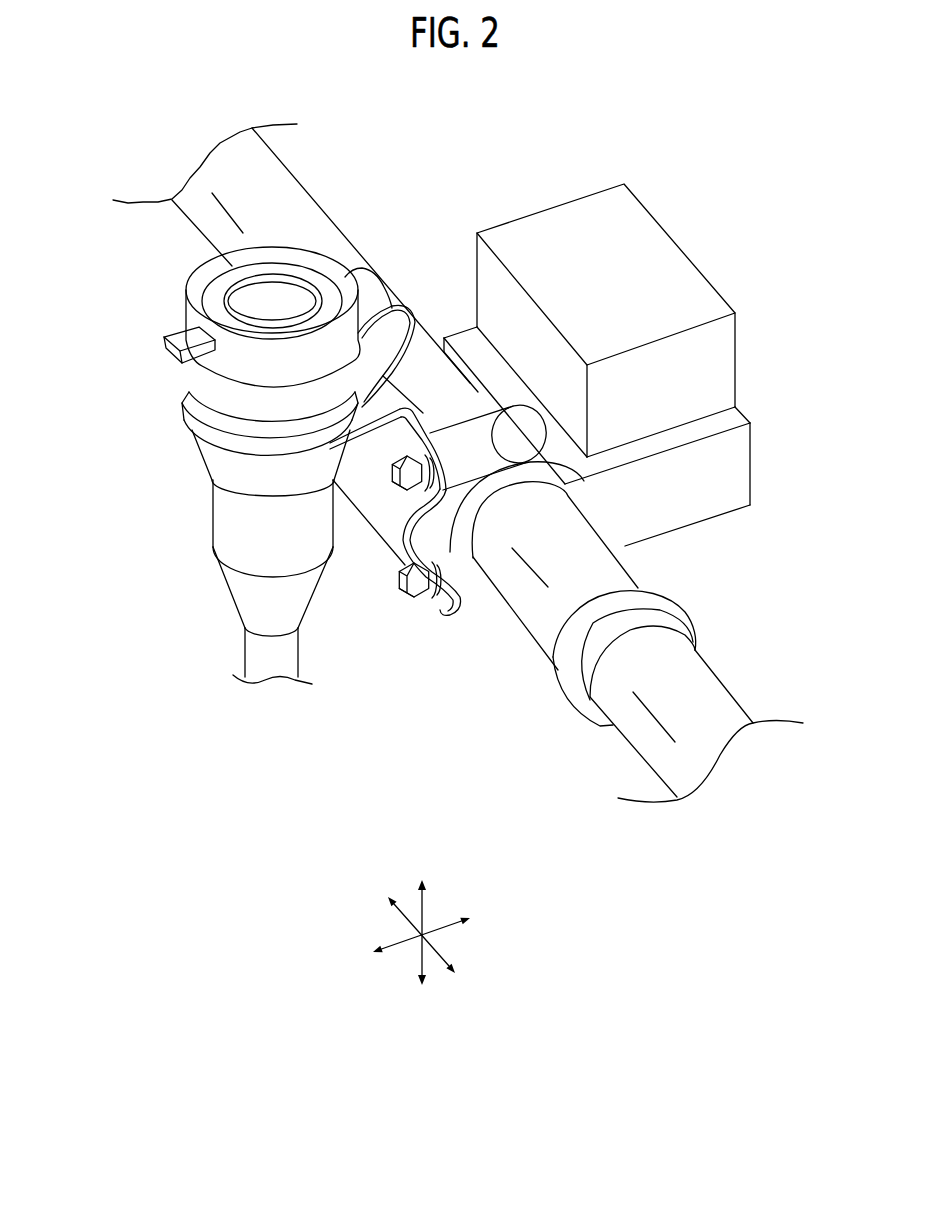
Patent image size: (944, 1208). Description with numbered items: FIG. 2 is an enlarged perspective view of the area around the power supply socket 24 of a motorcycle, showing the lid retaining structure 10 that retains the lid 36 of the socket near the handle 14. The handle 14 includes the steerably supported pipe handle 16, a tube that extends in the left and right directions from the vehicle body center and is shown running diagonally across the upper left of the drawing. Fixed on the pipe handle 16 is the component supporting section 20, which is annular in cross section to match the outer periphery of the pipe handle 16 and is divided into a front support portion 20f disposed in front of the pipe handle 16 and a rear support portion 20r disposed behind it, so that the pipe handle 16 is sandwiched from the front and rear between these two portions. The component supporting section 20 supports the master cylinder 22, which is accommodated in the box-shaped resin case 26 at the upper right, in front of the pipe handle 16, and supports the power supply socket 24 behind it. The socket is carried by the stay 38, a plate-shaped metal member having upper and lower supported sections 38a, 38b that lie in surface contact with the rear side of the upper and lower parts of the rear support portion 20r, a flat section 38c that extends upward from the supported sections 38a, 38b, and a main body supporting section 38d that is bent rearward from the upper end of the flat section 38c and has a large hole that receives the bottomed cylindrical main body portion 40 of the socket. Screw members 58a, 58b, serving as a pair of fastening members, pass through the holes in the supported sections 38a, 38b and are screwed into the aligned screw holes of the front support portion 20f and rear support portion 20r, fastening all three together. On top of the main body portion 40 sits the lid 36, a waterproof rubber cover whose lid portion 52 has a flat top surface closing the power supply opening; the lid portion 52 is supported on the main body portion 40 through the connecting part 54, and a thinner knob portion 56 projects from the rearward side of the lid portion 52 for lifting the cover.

The lid retaining structure 10 is at (350, 643).
The handle 14 is at (333, 307).
The pipe handle 16 is at (262, 167).
The component supporting section 20 is at (626, 632).
The front support portion 20f is at (640, 523).
The rear support portion 20r is at (495, 600).
The master cylinder 22 is at (616, 365).
The resin case 26 is at (673, 233).
The power supply socket 24 is at (222, 364).
The lid 36 is at (222, 283).
The stay 38 is at (306, 535).
The supported section 38a is at (437, 452).
The supported section 38b is at (460, 600).
The flat section 38c is at (363, 497).
The main body supporting section 38d is at (183, 435).
The main body portion 40 is at (223, 512).
The lid portion 52 is at (193, 292).
The connecting part 54 is at (367, 283).
The knob portion 56 is at (162, 348).
The screw member 58a is at (405, 476).
The screw member 58b is at (414, 590).